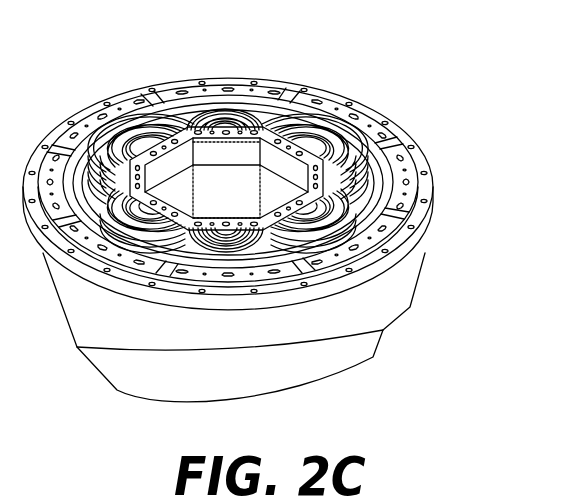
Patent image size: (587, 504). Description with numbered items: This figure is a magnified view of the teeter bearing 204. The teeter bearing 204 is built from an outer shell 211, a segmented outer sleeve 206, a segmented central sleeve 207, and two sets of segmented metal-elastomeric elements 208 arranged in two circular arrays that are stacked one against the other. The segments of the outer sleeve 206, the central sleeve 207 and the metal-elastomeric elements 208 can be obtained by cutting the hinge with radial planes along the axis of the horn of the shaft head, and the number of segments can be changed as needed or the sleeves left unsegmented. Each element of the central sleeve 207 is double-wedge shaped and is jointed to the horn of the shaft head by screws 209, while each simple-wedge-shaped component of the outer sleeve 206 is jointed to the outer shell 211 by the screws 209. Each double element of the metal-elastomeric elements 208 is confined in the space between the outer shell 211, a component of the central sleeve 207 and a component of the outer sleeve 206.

The teeter bearing 204 is at (126, 386).
The segmented outer sleeve 206 is at (272, 82).
The segmented central sleeve 207 is at (291, 128).
The segmented metal-elastomeric elements 208 is at (341, 140).
The screws 209 is at (188, 82).
The outer shell 211 is at (428, 174).